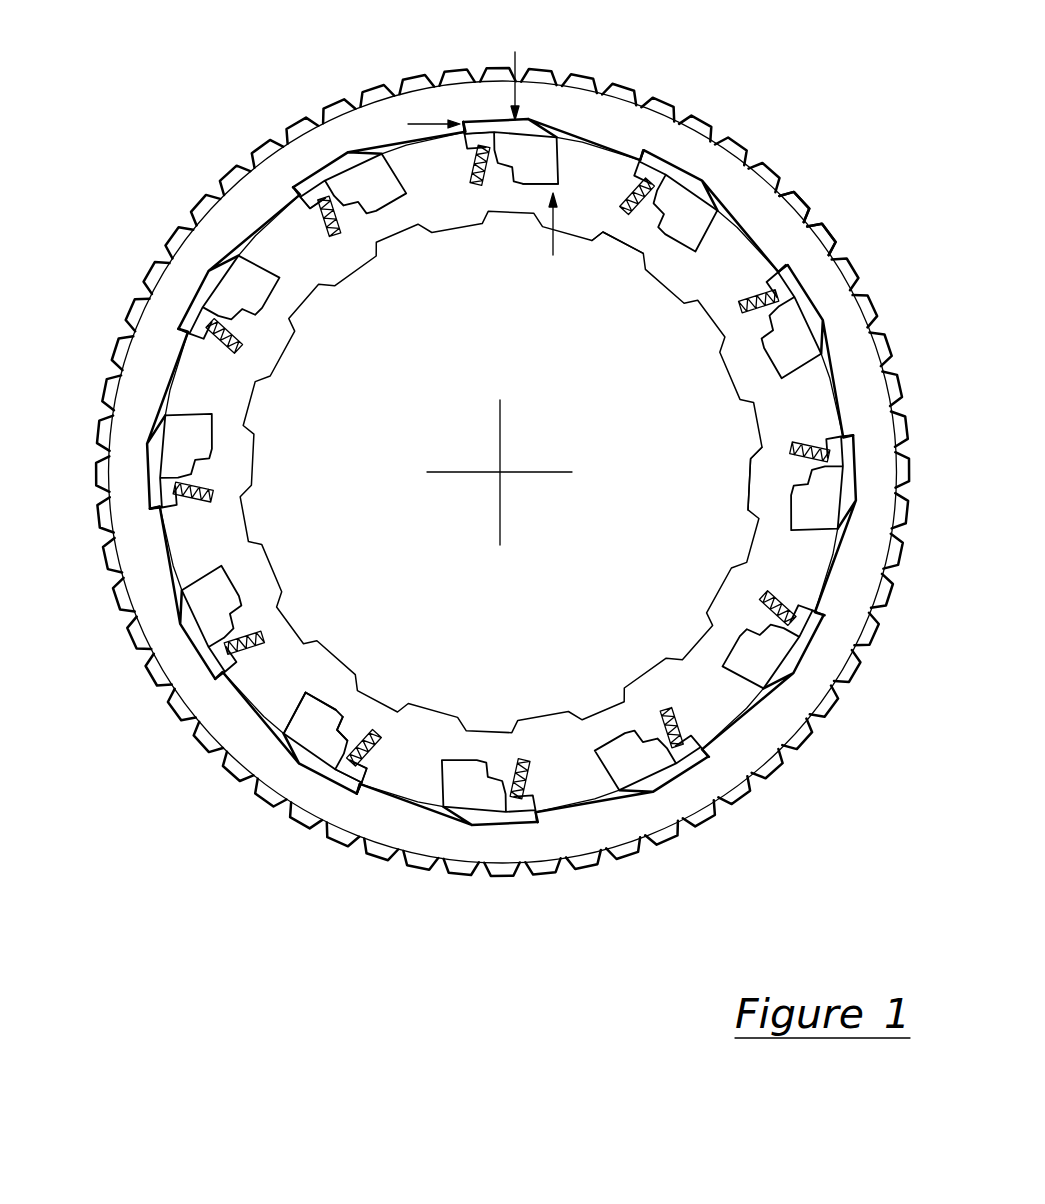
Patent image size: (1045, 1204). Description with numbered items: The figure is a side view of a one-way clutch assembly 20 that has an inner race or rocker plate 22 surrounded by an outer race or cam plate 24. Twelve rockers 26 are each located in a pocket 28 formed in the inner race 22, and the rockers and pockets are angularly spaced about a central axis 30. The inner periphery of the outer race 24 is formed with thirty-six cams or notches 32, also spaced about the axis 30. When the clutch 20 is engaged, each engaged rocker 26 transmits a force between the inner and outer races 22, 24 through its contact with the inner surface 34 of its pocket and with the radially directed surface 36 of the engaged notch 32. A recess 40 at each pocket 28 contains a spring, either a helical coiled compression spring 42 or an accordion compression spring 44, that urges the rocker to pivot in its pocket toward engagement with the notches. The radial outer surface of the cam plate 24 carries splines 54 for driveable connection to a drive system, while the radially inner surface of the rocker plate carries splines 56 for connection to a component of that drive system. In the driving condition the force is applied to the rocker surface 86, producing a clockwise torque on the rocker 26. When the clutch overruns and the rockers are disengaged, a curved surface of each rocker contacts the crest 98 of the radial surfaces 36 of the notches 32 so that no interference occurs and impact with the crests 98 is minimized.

The one-way clutch assembly 20 is at (495, 460).
The inner race or rocker plate 22 is at (757, 420).
The outer race or cam plate 24 is at (160, 277).
The rocker 26 is at (587, 133).
The pocket 28 is at (545, 188).
The central axis 30 is at (503, 476).
The cams or notches 32 is at (250, 241).
The inner surface of the pocket 34 is at (577, 227).
The radially directed surface 36 is at (470, 122).
The recess 40 is at (322, 223).
The helical coiled compression spring 42 is at (370, 733).
The accordion compression spring 44 is at (337, 205).
The splines 54 is at (783, 173).
The splines 56 is at (742, 467).
The rocker surface 86 is at (455, 122).
The crest 98 is at (330, 153).